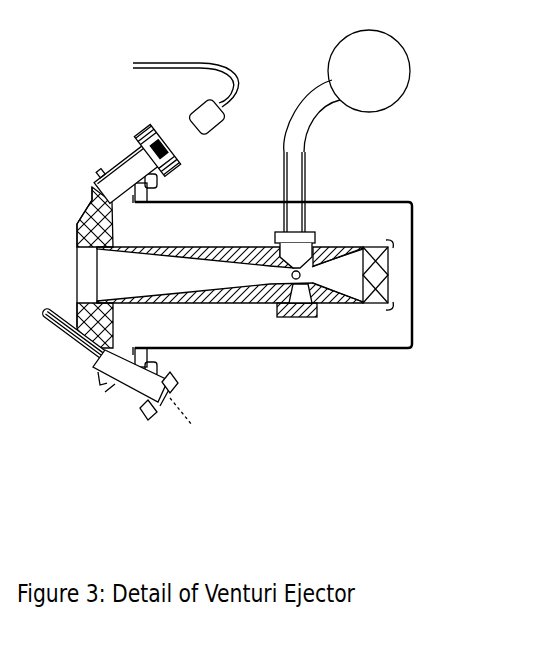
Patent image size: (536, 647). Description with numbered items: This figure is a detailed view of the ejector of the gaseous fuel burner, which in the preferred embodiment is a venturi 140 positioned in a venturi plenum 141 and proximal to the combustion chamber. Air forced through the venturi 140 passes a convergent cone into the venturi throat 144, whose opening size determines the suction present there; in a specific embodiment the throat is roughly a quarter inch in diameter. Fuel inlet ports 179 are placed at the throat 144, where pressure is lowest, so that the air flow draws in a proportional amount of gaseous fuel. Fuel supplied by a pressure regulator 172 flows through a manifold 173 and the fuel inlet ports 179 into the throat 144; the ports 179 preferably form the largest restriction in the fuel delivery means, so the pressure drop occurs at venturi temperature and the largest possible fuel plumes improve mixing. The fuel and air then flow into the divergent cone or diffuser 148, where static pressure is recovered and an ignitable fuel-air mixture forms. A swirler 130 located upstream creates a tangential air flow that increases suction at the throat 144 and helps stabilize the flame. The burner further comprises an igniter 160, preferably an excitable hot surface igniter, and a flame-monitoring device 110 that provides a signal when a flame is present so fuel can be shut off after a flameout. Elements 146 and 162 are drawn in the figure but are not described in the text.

The flame-monitoring device 110 is at (160, 395).
The igniter 160 is at (153, 410).
The swirler 130 is at (387, 256).
The venturi 140 is at (324, 240).
The venturi plenum 141 is at (166, 331).
The venturi throat 144 is at (342, 304).
The diffuser 146 is at (345, 267).
The diffuser 148 is at (201, 289).
The sensor hose 162 is at (200, 109).
The pressure regulator 172 is at (351, 73).
The manifold 173 is at (300, 290).
The fuel inlet ports 179 is at (317, 283).